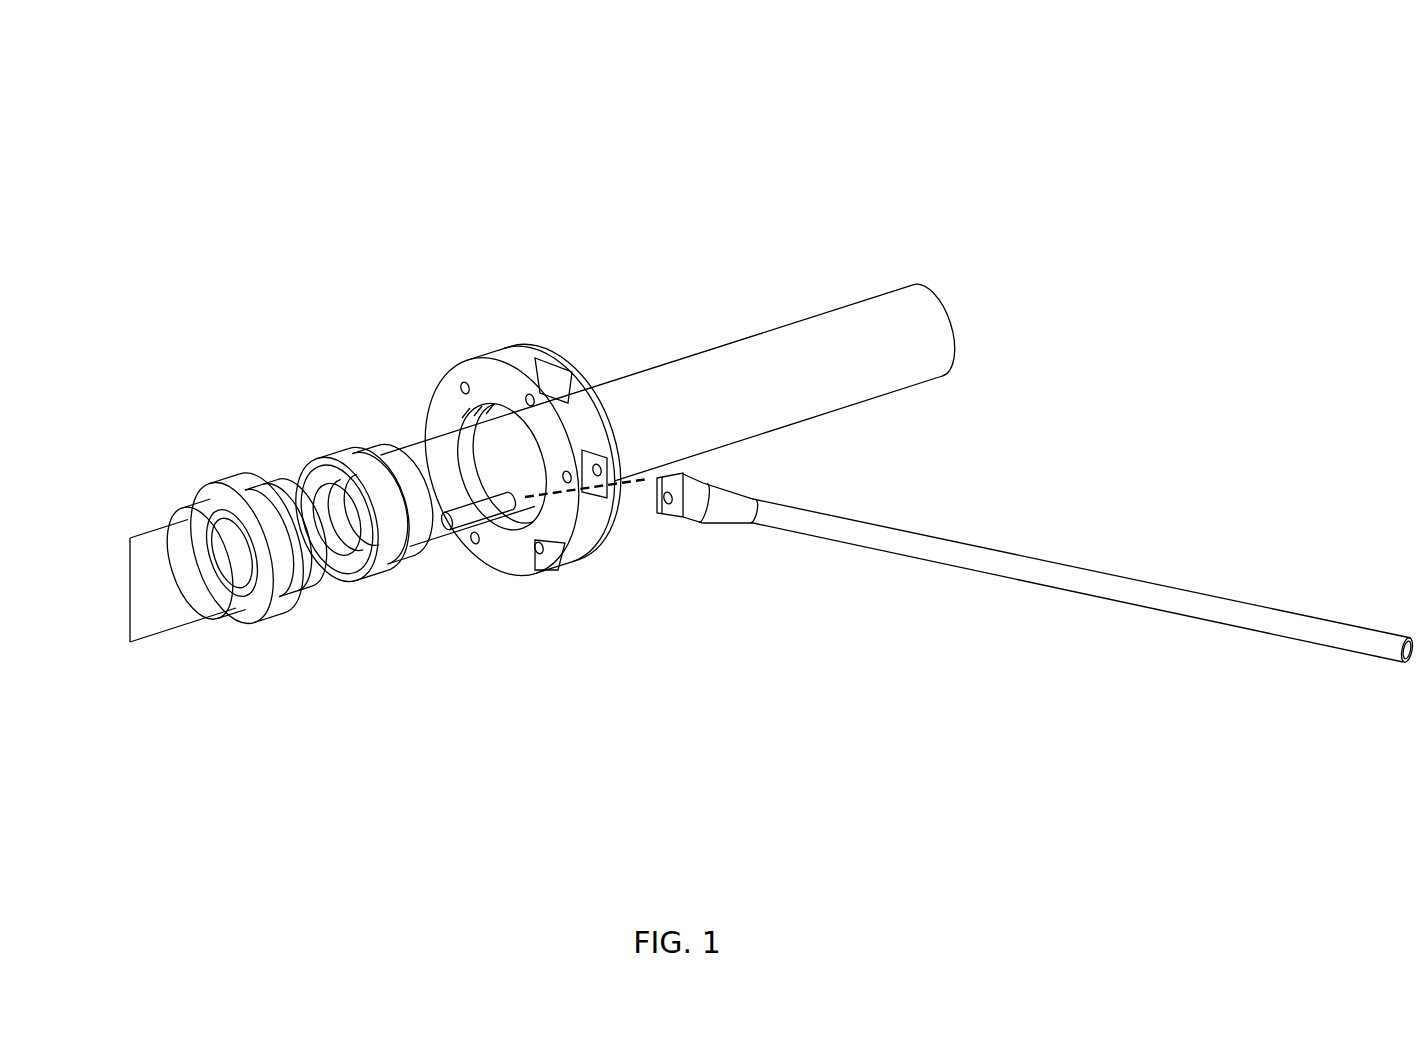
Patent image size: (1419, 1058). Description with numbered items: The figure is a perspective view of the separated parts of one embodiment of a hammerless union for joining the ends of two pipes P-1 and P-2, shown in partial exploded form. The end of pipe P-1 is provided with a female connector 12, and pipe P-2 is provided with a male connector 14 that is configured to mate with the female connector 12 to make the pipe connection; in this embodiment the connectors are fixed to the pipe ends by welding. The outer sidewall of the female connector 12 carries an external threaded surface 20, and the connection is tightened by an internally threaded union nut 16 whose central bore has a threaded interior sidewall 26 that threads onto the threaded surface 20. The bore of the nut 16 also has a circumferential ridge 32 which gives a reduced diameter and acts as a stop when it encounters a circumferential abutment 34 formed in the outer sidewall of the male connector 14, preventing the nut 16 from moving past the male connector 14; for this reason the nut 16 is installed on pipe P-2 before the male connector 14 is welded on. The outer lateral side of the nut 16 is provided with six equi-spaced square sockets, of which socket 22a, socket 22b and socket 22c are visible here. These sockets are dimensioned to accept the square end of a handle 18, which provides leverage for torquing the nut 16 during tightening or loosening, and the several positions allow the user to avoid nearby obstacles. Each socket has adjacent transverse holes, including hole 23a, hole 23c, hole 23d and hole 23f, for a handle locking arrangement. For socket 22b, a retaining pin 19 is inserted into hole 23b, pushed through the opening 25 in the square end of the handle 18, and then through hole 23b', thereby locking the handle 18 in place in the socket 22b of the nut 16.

The pipe P-1 is at (160, 516).
The female connector 12 is at (214, 648).
The threaded surface 20 is at (288, 587).
The male connector 14 is at (293, 450).
The threaded interior sidewall 26 is at (387, 402).
The abutment 34 is at (387, 567).
The pipe P-2 is at (672, 329).
The nut 16 is at (492, 384).
The ridge 32 is at (528, 520).
The socket 22a is at (567, 375).
The socket 22b is at (766, 612).
The socket 22c is at (660, 662).
The hole 23a is at (531, 398).
The hole 23b is at (629, 352).
The hole 23b' is at (668, 375).
The hole 23c is at (695, 698).
The hole 23d is at (475, 540).
The hole 23f is at (466, 385).
The retaining pin 19 is at (552, 629).
The handle 18 is at (1035, 517).
The opening 25 is at (668, 498).